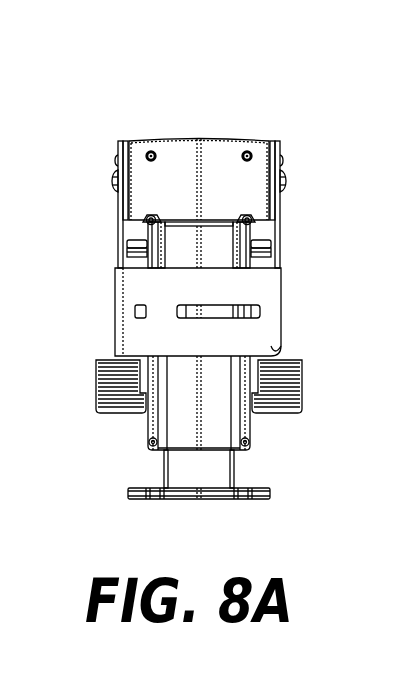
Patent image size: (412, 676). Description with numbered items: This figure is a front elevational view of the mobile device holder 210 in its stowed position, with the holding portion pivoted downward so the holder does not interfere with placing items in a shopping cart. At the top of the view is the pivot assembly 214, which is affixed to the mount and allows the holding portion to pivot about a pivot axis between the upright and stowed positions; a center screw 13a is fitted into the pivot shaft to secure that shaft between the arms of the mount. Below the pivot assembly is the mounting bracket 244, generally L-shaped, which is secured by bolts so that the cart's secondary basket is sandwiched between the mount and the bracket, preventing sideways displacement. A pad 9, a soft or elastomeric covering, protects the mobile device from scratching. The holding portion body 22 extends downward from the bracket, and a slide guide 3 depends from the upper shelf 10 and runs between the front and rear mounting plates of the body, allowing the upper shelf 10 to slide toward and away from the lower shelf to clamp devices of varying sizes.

The mobile device holder 210 is at (237, 104).
The pivot assembly 214 is at (100, 149).
The center screw 13a is at (287, 180).
The mounting bracket 244 is at (141, 286).
The pad 9 is at (288, 397).
The holding portion body 22 is at (224, 420).
The slide guide 3 is at (172, 470).
The upper shelf 10 is at (140, 498).